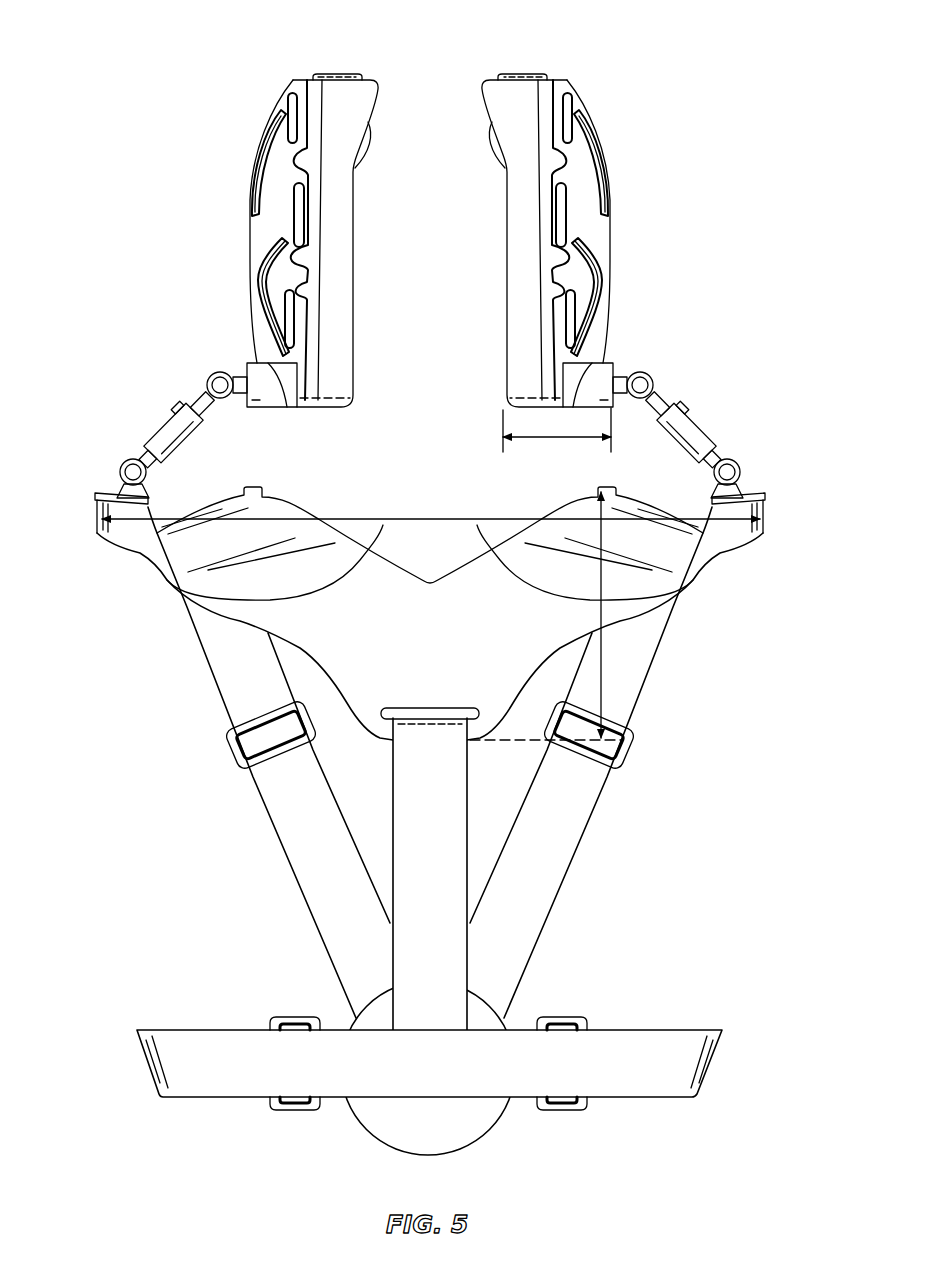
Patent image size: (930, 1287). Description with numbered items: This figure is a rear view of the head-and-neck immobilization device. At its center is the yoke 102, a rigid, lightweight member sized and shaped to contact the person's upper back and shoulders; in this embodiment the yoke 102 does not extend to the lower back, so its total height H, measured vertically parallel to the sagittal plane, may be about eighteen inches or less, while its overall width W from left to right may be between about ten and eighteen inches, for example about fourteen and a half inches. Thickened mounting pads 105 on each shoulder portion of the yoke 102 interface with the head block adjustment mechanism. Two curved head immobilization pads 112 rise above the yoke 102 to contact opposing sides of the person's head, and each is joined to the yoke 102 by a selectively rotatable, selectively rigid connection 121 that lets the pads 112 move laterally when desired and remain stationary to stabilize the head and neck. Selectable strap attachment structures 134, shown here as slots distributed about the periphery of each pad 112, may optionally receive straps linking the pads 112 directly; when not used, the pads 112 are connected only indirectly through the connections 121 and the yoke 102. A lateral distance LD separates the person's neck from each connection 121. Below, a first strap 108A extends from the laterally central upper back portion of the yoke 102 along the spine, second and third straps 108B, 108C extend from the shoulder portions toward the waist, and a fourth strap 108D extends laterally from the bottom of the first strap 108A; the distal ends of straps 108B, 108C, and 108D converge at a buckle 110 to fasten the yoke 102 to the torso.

The yoke 102 is at (428, 568).
The mounting pad 105 is at (113, 510).
The first strap 108A is at (458, 916).
The second strap 108B is at (618, 681).
The third strap 108C is at (233, 657).
The fourth strap 108D is at (665, 1057).
The buckle 110 is at (182, 71).
The head immobilization pad 112 is at (236, 233).
The selectively rotatable, selectively rigid connection 121 is at (151, 417).
The selectable strap attachment structure 134 is at (299, 204).
The overall width W is at (190, 597).
The total height H is at (601, 610).
The lateral distance LD is at (557, 435).